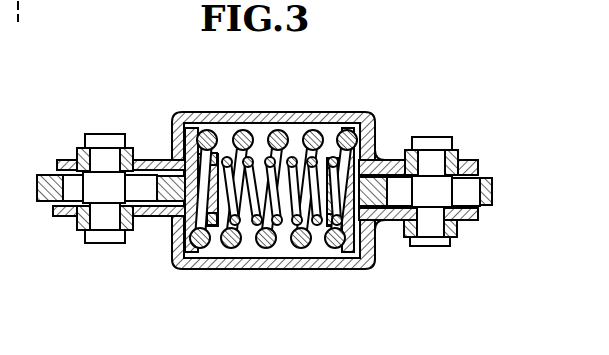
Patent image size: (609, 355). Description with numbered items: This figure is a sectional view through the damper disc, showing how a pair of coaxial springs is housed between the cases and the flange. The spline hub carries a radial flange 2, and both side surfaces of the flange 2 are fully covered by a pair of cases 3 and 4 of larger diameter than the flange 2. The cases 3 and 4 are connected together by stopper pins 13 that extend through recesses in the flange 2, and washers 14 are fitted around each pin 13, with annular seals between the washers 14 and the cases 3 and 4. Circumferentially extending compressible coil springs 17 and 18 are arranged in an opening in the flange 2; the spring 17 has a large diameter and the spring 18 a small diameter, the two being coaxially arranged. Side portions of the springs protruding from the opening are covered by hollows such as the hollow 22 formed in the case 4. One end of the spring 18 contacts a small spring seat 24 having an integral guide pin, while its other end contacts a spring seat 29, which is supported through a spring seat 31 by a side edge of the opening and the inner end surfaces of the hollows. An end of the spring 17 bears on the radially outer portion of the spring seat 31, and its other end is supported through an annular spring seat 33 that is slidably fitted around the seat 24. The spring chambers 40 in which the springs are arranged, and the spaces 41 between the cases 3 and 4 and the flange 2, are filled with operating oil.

The radial flange 2 is at (37, 188).
The case 3 is at (61, 217).
The case 4 is at (67, 160).
The stopper pin 13 is at (104, 157).
The space 41 is at (148, 162).
The spring seat 31 is at (187, 127).
The spring chamber 40 is at (297, 127).
The annular spring seat 33 is at (350, 114).
The small spring seat 24 is at (374, 152).
The spring seat 29 is at (215, 228).
The compressible coil spring 17 is at (229, 244).
The compressible coil spring 18 is at (250, 246).
The washer 14 is at (7, 265).
The hollow 22 is at (17, 305).